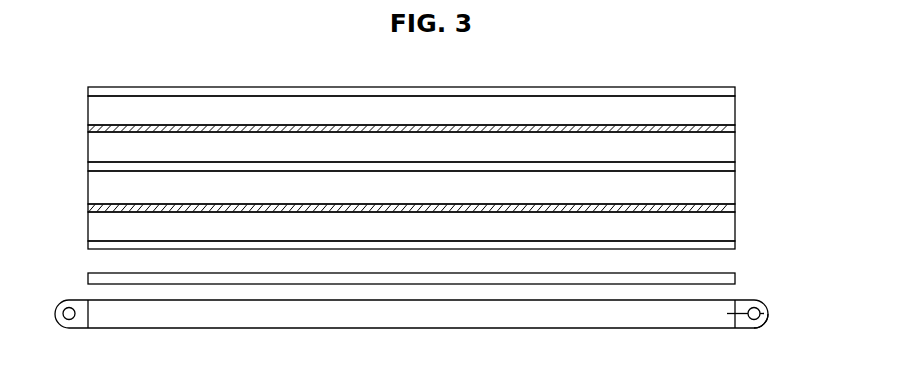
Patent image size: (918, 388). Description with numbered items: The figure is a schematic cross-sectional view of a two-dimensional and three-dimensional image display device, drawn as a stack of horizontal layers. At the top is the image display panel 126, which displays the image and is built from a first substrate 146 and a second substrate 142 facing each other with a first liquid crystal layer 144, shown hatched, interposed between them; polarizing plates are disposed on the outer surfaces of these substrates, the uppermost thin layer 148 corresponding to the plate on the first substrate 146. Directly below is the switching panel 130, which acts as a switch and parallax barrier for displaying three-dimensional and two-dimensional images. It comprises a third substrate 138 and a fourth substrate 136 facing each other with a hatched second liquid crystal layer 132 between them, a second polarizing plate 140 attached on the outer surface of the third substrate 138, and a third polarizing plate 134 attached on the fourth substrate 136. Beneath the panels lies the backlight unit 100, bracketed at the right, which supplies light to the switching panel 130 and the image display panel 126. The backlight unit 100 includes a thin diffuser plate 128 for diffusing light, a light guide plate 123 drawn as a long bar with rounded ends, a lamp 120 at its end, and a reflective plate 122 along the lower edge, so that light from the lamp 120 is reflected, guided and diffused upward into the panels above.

The backlight unit 100 is at (461, 318).
The lamp 120 is at (760, 309).
The reflective plate 122 is at (762, 329).
The light guide plate 123 is at (759, 316).
The image display panel 126 is at (421, 129).
The diffuser plate 128 is at (735, 277).
The switching panel 130 is at (421, 212).
The second liquid crystal layer 132 is at (735, 208).
The third polarizing plate 134 is at (735, 245).
The fourth substrate 136 is at (735, 226).
The third substrate 138 is at (735, 186).
The second polarizing plate 140 is at (735, 166).
The second substrate 142 is at (735, 147).
The first liquid crystal layer 144 is at (735, 128).
The first substrate 146 is at (735, 110).
The upper protective layer 148 is at (735, 91).